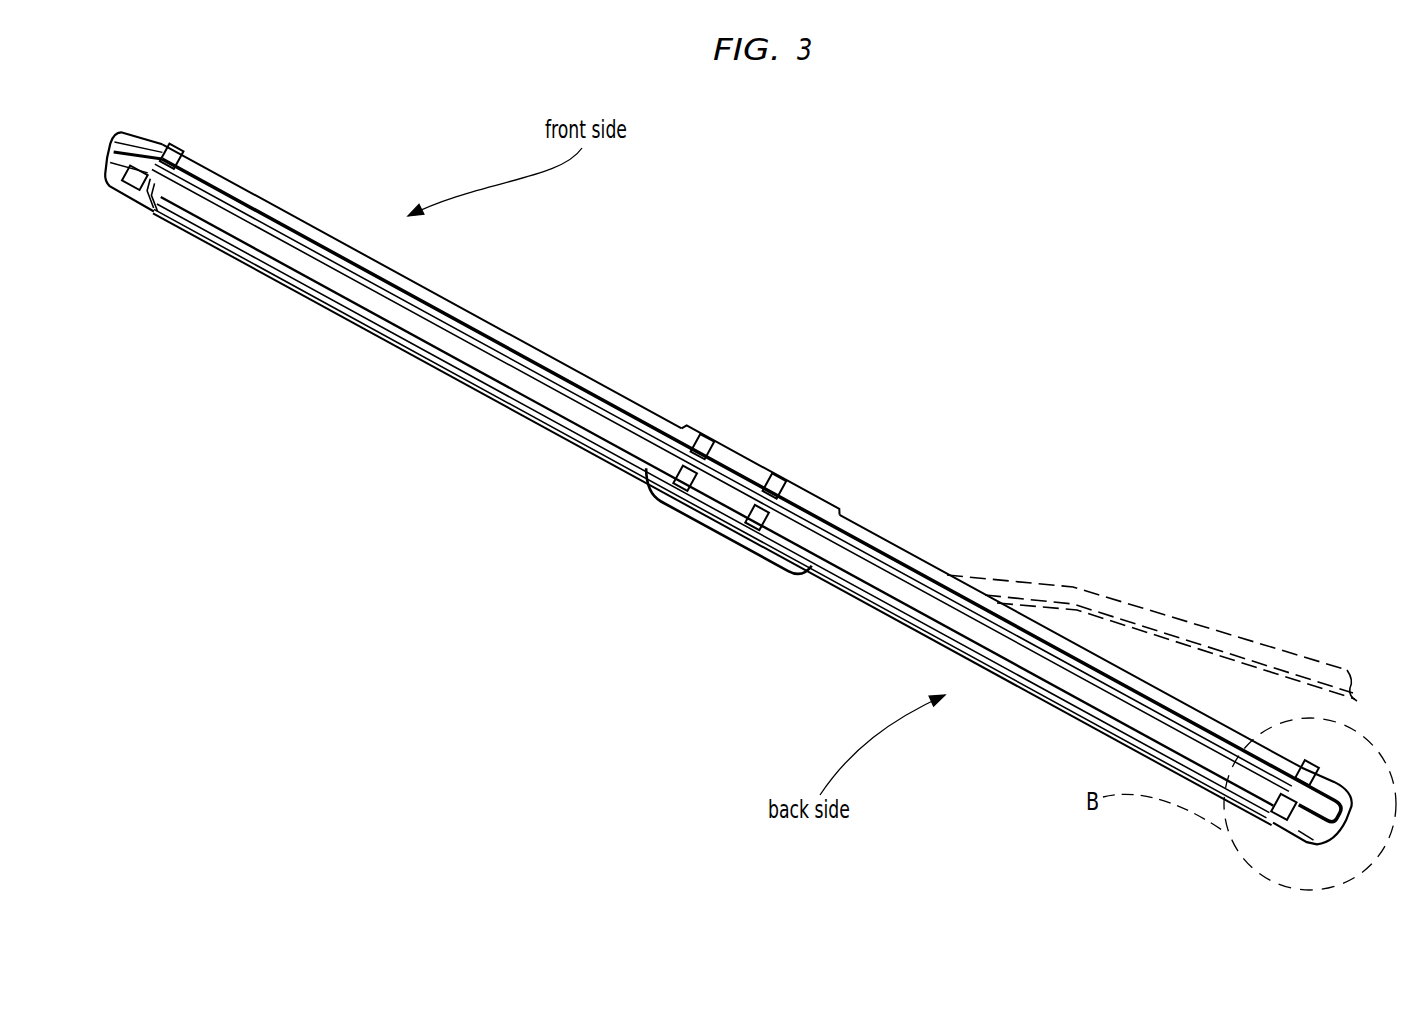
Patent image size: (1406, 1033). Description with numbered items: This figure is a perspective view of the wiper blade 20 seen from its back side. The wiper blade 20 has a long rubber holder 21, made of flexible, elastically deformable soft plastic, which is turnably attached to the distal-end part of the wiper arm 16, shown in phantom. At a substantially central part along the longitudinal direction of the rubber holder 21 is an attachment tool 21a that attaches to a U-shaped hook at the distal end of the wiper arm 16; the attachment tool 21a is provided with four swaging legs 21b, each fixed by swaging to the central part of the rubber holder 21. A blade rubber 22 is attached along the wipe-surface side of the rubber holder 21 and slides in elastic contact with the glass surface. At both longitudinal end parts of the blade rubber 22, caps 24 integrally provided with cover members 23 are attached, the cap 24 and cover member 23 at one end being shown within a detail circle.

The wiper blade 20 is at (620, 346).
The rubber holder 21 is at (543, 395).
The attachment tool 21a is at (745, 535).
The swaging legs 21b is at (705, 438).
The blade rubber 22 is at (452, 333).
The cover member 23 is at (150, 134).
The cap 24 is at (124, 188).
The wiper arm 16 is at (1175, 630).